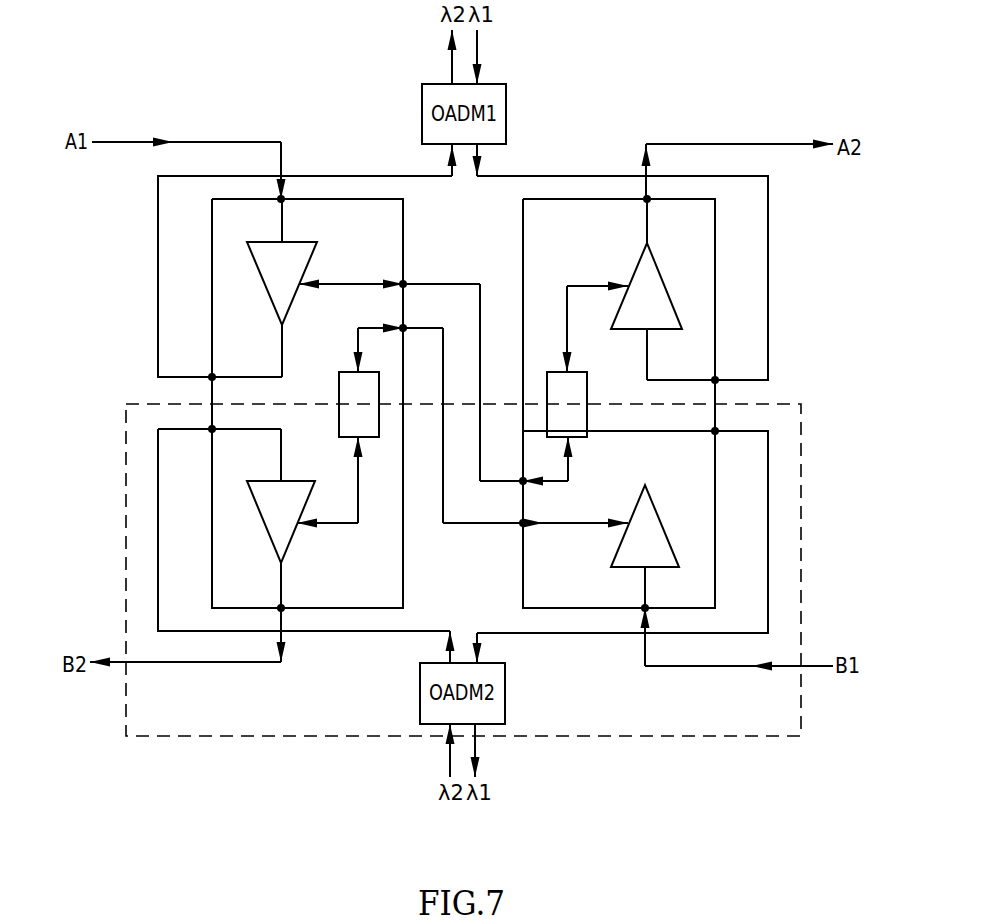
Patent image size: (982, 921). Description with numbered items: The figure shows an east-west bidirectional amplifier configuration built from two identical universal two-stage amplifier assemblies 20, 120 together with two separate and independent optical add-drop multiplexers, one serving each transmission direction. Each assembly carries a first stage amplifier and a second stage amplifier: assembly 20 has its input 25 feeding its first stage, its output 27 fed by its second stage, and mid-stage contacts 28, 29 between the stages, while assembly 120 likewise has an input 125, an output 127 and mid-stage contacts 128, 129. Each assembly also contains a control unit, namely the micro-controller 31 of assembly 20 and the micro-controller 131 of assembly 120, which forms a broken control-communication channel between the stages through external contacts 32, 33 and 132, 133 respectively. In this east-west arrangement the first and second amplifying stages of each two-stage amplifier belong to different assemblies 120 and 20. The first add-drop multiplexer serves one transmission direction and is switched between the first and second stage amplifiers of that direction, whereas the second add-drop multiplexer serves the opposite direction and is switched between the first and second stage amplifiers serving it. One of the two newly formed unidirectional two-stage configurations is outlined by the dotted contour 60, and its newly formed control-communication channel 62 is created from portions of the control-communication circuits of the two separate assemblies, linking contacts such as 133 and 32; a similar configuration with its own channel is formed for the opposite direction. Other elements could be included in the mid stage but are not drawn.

The universal two-stage amplifier assembly 20 is at (605, 404).
The input of the assembly 25 is at (659, 607).
The output of the assembly 27 is at (650, 212).
The mid-stage contact 28 is at (703, 434).
The mid-stage contact 29 is at (702, 380).
The micro-controller 31 is at (587, 392).
The external contact 32 is at (535, 536).
The external contact 33 is at (526, 461).
The dotted contour 60 is at (802, 705).
The control-communication channel 62 is at (478, 524).
The universal two-stage amplifier assembly 120 is at (319, 419).
The input of the assembly 125 is at (297, 606).
The output of the assembly 127 is at (285, 208).
The mid-stage contact 128 is at (228, 374).
The mid-stage contact 129 is at (229, 432).
The micro-controller 131 is at (339, 400).
The external contact 132 is at (389, 368).
The external contact 133 is at (399, 424).